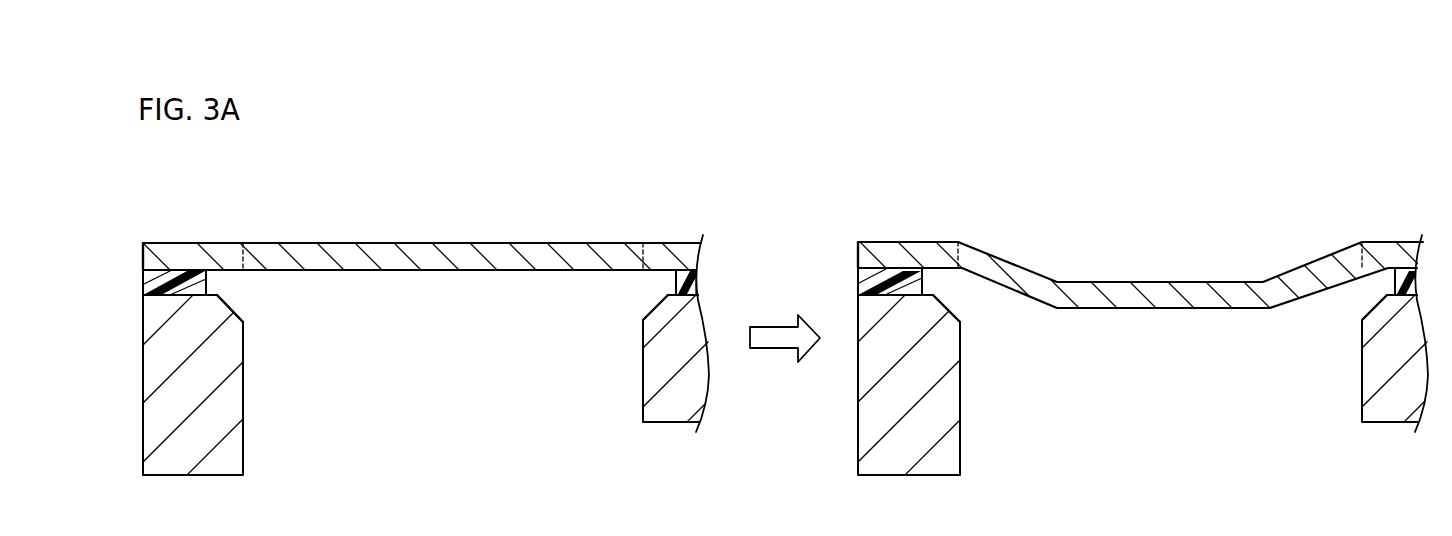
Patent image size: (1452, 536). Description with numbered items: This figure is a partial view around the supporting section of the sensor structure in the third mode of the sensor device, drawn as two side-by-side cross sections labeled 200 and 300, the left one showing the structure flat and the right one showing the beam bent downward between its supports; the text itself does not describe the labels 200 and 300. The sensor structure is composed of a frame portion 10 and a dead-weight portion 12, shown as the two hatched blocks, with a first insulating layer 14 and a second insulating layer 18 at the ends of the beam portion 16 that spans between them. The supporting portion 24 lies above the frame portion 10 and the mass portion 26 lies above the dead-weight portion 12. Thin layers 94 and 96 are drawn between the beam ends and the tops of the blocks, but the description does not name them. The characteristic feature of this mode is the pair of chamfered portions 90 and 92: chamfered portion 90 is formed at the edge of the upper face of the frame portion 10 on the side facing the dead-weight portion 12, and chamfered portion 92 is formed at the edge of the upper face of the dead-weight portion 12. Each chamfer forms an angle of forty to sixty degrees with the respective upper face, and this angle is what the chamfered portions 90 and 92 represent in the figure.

The frame portion 10 is at (230, 414).
The dead-weight portion 12 is at (658, 386).
The first insulating layer 14 is at (177, 270).
The beam portion 16 is at (443, 248).
The second insulating layer 18 is at (686, 268).
The supporting portion 24 is at (208, 252).
The mass portion 26 is at (660, 256).
The chamfered portion 90 is at (232, 309).
The chamfered portion 92 is at (655, 309).
The first bonding layer 94 is at (220, 291).
The second bonding layer 96 is at (676, 281).
The flat state 200 is at (556, 187).
The deformed state 300 is at (1273, 187).